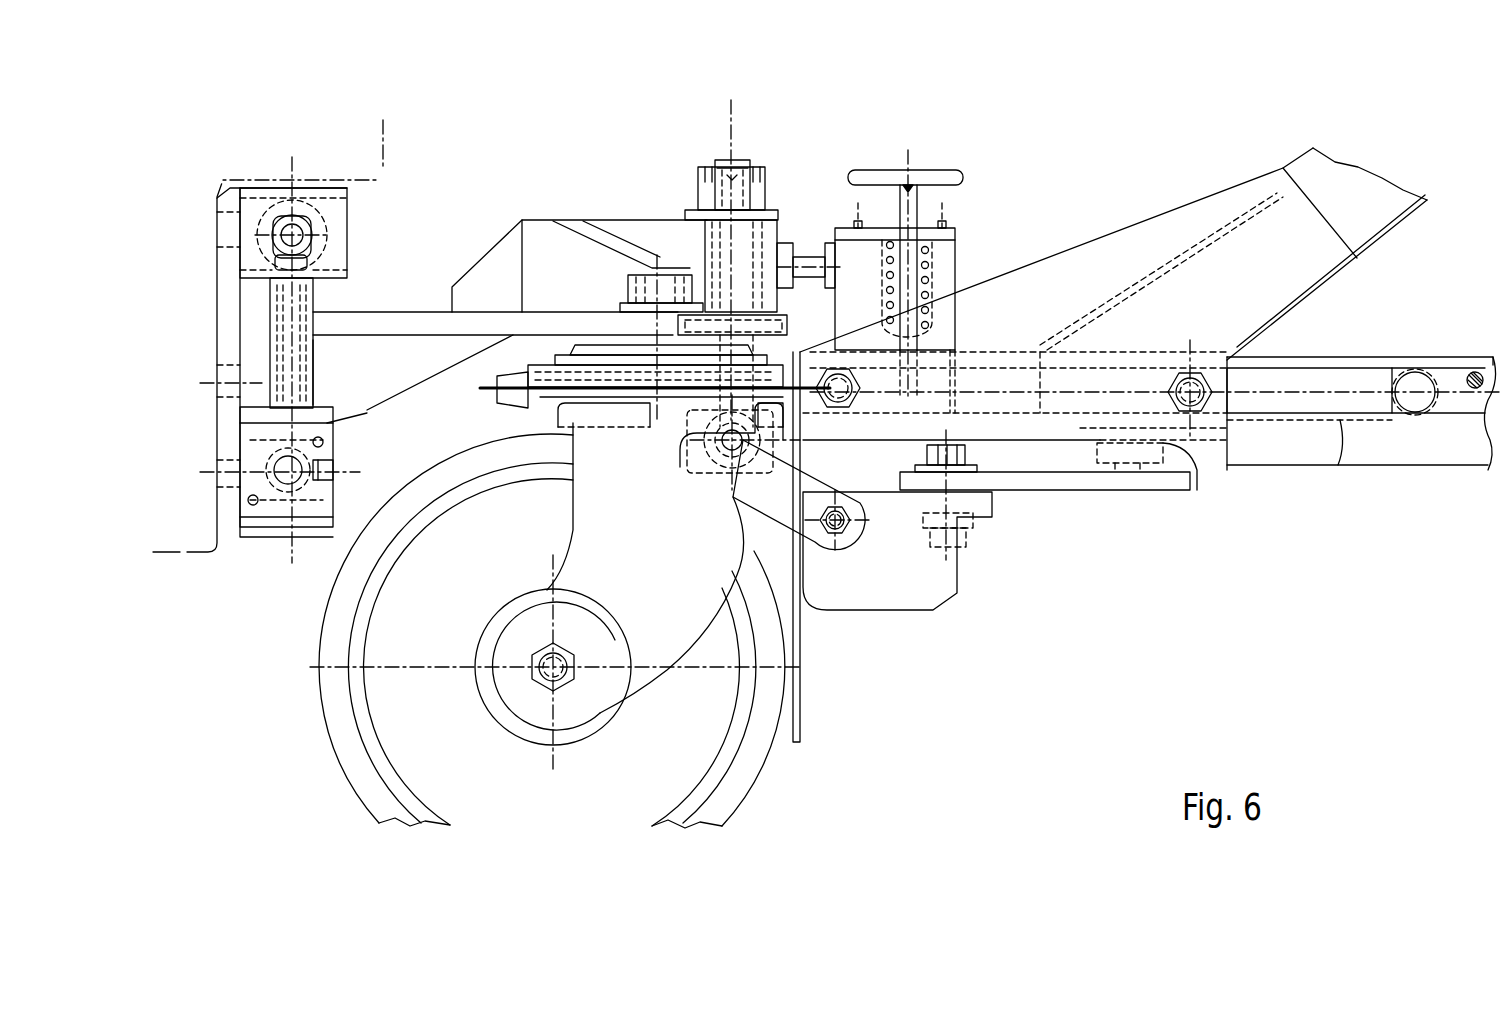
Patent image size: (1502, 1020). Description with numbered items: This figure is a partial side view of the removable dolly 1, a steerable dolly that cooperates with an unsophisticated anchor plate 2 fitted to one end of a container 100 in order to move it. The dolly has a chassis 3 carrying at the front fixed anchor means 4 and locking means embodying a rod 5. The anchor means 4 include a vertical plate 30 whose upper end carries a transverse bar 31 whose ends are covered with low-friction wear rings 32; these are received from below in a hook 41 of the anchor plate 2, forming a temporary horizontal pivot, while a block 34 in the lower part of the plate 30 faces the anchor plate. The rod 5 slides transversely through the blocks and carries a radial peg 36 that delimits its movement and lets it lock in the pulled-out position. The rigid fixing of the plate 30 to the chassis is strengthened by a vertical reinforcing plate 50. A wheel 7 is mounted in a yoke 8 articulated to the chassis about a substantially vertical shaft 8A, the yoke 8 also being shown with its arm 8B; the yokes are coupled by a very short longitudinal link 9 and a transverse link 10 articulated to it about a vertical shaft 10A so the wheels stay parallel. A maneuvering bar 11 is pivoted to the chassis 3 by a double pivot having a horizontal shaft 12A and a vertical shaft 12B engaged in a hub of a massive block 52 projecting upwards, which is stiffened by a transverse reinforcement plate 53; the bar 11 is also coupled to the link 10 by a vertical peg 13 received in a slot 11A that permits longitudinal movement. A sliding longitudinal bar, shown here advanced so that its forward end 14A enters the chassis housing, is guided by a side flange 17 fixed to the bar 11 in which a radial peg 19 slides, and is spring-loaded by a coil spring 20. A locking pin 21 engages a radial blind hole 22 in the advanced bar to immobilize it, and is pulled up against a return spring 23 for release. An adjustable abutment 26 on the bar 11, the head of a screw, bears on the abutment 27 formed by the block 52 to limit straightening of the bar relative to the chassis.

The removable dolly 1 is at (1010, 622).
The anchor plate 2 is at (212, 283).
The chassis 3 is at (468, 258).
The fixed anchor means 4 is at (325, 297).
The rod 5 is at (313, 363).
The wheel 7 is at (750, 793).
The yoke 8 is at (553, 527).
The vertical shaft 8A is at (688, 267).
The fork arm 8B is at (773, 503).
The longitudinal link 9 is at (887, 510).
The transverse link 10 is at (1068, 493).
The vertical shaft 10A is at (957, 447).
The maneuvering bar 11 is at (1355, 165).
The slot 11A is at (1215, 470).
The horizontal shaft 12A is at (713, 433).
The vertical shaft 12B is at (718, 157).
The peg 13 is at (1140, 453).
The forward end of the longitudinal bar 14A is at (500, 417).
The side flange 17 is at (1408, 465).
The peg 19 is at (1438, 383).
The coil spring 20 is at (1337, 420).
The locking pin 21 is at (925, 170).
The radial blind hole 22 is at (920, 380).
The return spring 23 is at (935, 263).
The abutment 26 is at (806, 250).
The abutment 27 is at (790, 247).
The vertical plate 30 is at (283, 325).
The transverse bar 31 is at (273, 222).
The wear ring 32 is at (316, 212).
The block 34 is at (360, 508).
The radial peg 36 is at (340, 470).
The hook 41 is at (347, 203).
The vertical reinforcing plate 50 is at (358, 408).
The block 52 is at (583, 217).
The transverse reinforcement plate 53 is at (578, 284).
The container 100 is at (380, 168).